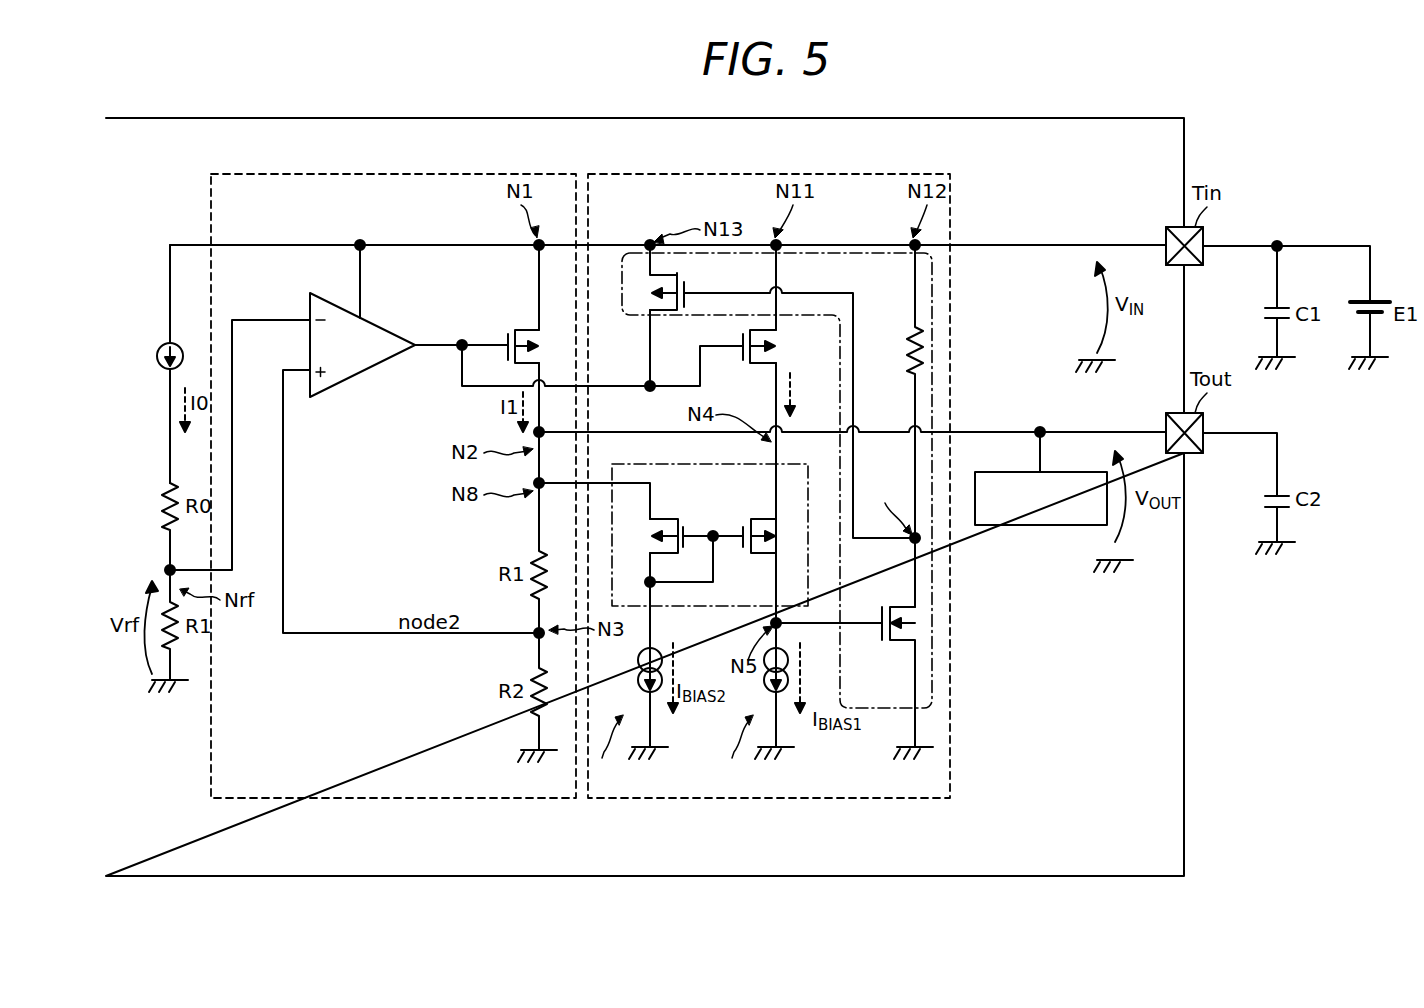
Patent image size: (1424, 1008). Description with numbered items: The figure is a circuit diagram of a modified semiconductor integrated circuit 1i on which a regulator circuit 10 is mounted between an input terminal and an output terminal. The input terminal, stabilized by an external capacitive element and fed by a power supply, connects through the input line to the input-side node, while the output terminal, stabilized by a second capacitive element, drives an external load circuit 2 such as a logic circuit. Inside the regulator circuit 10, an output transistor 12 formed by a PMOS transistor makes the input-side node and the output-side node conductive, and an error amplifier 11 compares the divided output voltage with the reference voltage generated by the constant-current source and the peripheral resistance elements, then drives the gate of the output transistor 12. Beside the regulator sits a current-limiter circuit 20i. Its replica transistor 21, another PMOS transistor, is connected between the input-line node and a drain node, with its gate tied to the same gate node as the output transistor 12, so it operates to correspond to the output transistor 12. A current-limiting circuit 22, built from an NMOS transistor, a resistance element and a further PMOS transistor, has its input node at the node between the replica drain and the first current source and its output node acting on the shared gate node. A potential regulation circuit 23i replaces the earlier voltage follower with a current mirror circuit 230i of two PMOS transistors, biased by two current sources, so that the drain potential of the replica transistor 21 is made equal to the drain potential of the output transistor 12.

The semiconductor integrated circuit 1i is at (1110, 118).
The load circuit 2 is at (1042, 525).
The regulator circuit 10 is at (538, 174).
The error amplifier 11 is at (363, 372).
The output transistor 12 is at (503, 299).
The current-limiter circuit 20i is at (845, 174).
The replica transistor 21 is at (741, 352).
The current-limiting circuit 22 is at (932, 313).
The potential regulation circuit 23i is at (721, 690).
The current mirror circuit 230i is at (706, 608).